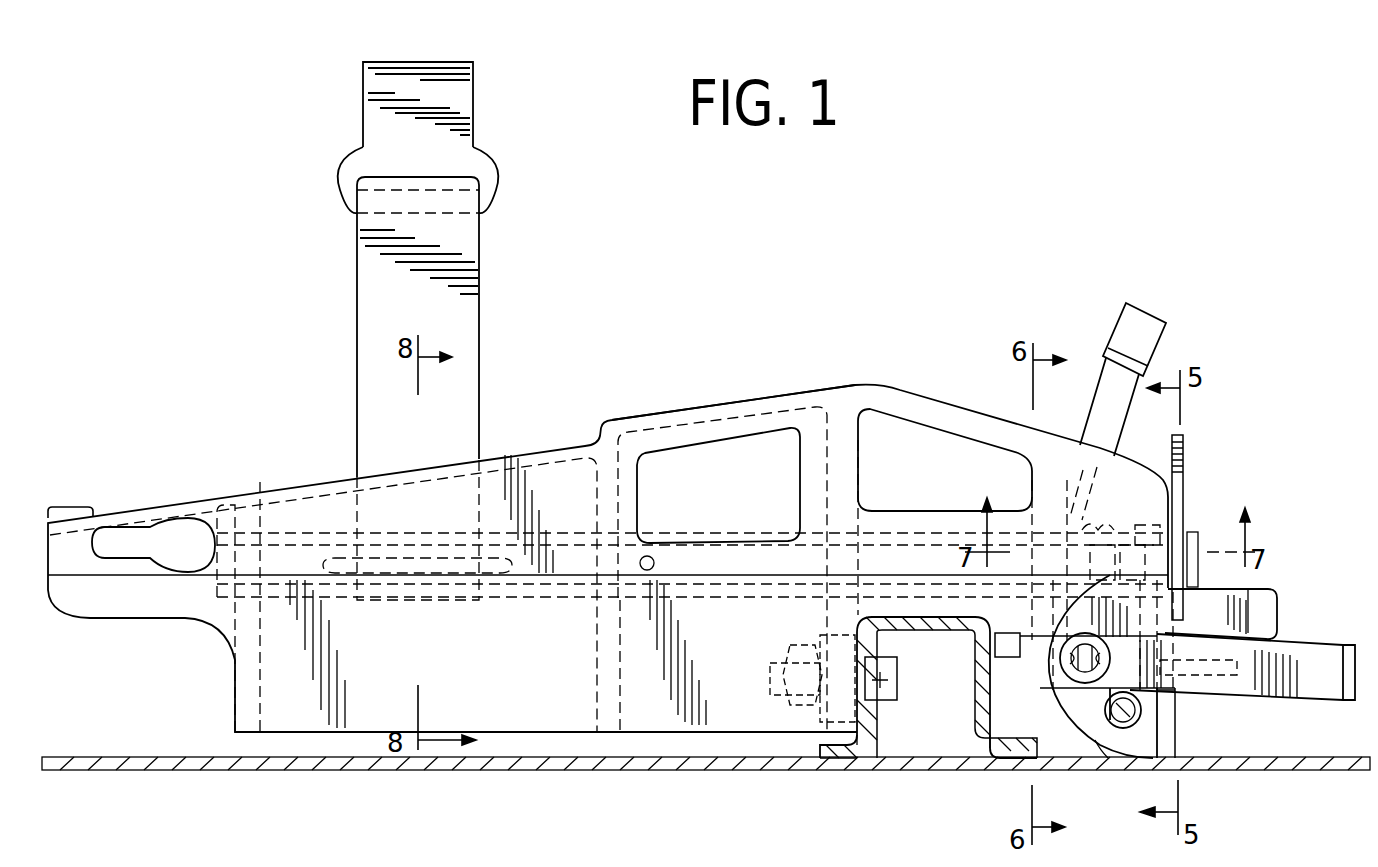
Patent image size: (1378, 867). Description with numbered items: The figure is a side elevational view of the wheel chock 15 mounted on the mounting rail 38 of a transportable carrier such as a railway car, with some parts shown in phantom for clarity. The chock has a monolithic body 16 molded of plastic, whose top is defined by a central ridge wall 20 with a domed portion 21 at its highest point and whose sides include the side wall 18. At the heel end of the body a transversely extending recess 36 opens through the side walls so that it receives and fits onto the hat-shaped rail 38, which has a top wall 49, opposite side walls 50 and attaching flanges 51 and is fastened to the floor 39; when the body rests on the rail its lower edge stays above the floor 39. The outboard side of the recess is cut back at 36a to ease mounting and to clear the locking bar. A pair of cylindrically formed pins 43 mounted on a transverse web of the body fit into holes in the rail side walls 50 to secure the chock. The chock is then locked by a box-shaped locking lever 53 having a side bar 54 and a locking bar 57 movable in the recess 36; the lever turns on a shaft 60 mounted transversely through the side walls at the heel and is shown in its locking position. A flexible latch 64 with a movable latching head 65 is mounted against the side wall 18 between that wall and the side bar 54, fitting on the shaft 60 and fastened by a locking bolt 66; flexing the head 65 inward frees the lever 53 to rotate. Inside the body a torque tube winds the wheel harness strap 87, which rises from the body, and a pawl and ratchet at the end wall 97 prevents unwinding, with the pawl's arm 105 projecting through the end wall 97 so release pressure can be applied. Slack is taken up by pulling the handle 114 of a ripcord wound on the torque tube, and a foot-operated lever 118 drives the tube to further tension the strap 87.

The wheel harness strap 87 is at (440, 325).
The central ridge wall 20 is at (540, 455).
The wheel chock 15 is at (656, 412).
The monolithic body 16 is at (815, 383).
The domed portion 21 is at (870, 385).
The handle 114 is at (1140, 320).
The foot-operated lever 118 is at (1190, 446).
The latch 64 is at (1277, 586).
The latching head 65 is at (1255, 606).
The locking lever 53 is at (1300, 640).
The arm 105 is at (1240, 686).
The top wall 49 is at (912, 636).
The cylindrically formed pins 43 is at (897, 680).
The locking bar 57 is at (1010, 650).
The recess 36 is at (1055, 700).
The side bar 54 is at (1217, 686).
The end wall 97 is at (1176, 727).
The shaft 60 is at (1083, 684).
The locking bolt 66 is at (1125, 729).
The cut back 36a is at (1105, 758).
The side walls 50 is at (863, 733).
The attaching flanges 51 is at (860, 760).
The mounting rail 38 is at (845, 737).
The floor 39 is at (925, 762).
The side wall 18 is at (645, 700).